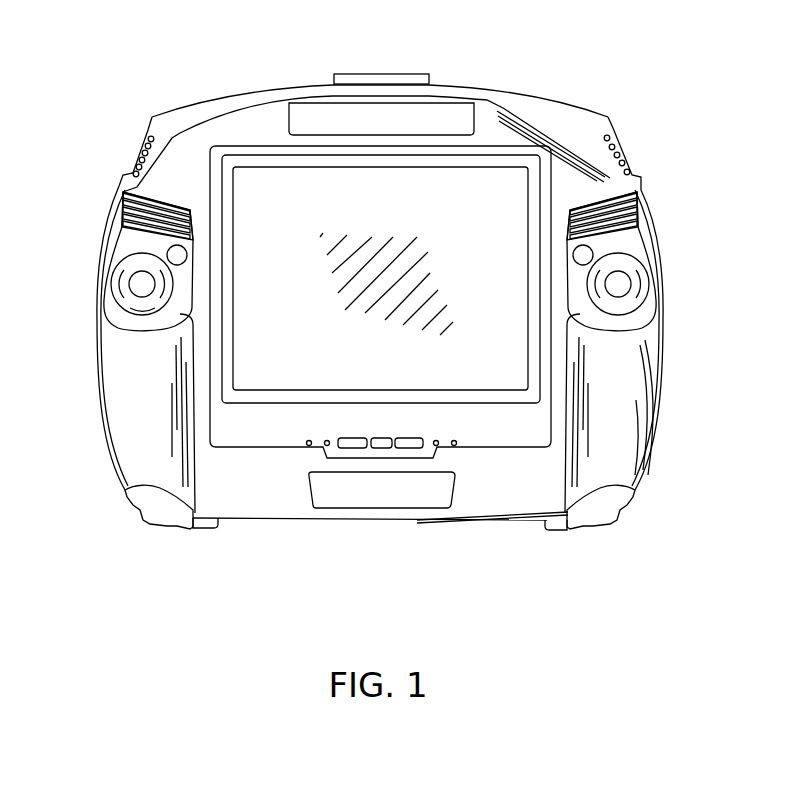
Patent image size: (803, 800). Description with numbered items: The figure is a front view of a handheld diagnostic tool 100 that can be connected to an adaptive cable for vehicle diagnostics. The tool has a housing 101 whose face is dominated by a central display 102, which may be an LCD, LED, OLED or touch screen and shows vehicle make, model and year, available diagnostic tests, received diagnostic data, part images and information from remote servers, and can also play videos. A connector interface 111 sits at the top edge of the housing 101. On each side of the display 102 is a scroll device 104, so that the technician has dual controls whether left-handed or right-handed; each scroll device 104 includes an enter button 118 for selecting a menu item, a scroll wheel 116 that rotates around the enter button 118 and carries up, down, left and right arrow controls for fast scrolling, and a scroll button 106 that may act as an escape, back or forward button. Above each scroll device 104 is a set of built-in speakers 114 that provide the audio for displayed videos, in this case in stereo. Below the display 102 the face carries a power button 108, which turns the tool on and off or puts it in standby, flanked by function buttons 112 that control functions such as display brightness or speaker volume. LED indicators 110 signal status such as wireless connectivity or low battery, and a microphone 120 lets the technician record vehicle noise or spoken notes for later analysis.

The diagnostic tool 100 is at (609, 122).
The housing 101 is at (230, 522).
The display 102 is at (268, 354).
The scroll device 104 is at (125, 250).
The scroll button 106 is at (170, 249).
The power button 108 is at (382, 448).
The LED indicators 110 is at (454, 446).
The connector interface 111 is at (397, 74).
The function buttons 112 is at (357, 448).
The speakers 114 is at (127, 196).
The scroll wheel 116 is at (113, 294).
The enter button 118 is at (142, 287).
The microphone 120 is at (310, 446).